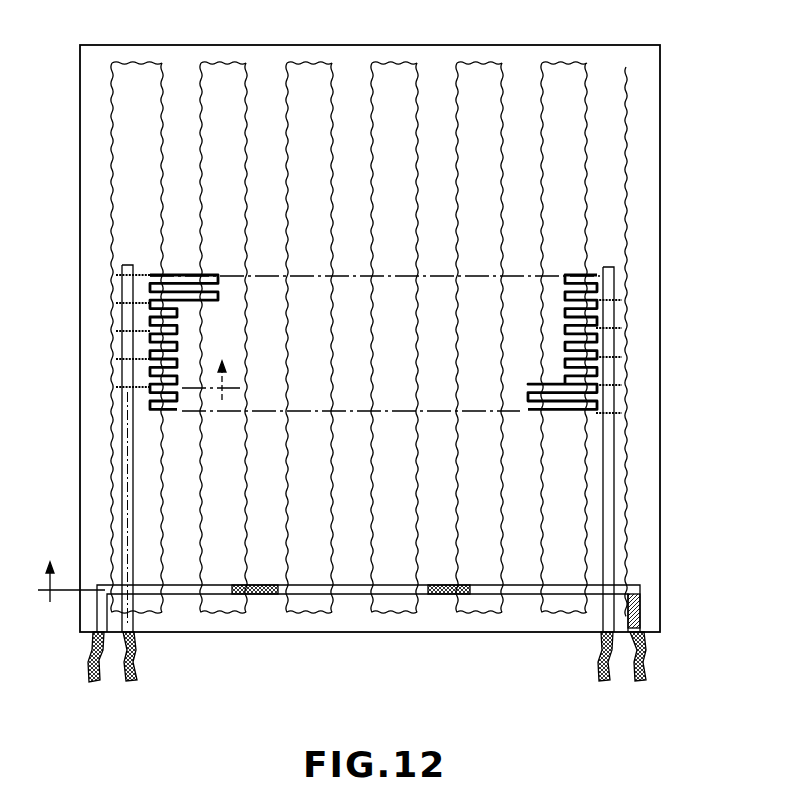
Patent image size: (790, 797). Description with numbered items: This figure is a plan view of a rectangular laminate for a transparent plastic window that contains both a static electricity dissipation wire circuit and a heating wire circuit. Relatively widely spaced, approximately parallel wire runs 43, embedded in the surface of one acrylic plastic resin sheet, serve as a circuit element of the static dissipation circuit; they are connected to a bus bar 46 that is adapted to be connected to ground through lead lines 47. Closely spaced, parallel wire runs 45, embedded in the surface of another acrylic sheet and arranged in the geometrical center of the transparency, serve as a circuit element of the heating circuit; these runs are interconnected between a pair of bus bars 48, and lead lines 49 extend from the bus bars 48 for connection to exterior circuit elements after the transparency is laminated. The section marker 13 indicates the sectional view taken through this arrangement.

The wire runs 43 is at (163, 152).
The wire runs 45 is at (142, 273).
The bus bar 46 is at (393, 596).
The lead lines 47 is at (88, 683).
The bus bars 48 is at (130, 443).
The lead lines 49 is at (135, 680).
The section line 13- 13 is at (139, 469).